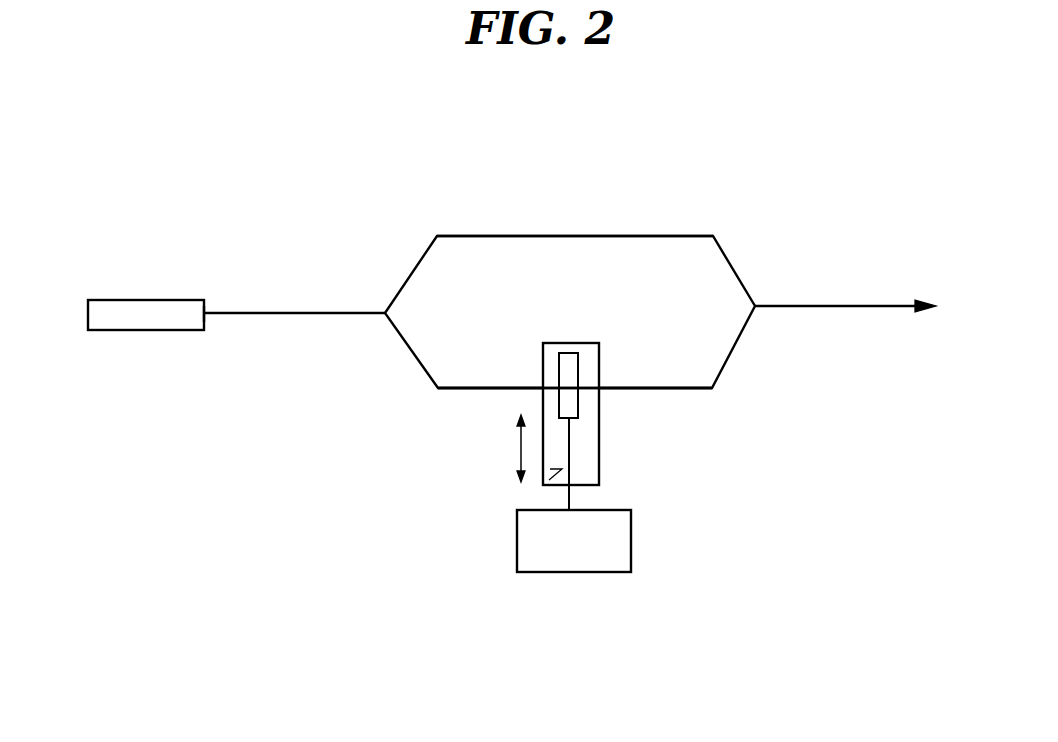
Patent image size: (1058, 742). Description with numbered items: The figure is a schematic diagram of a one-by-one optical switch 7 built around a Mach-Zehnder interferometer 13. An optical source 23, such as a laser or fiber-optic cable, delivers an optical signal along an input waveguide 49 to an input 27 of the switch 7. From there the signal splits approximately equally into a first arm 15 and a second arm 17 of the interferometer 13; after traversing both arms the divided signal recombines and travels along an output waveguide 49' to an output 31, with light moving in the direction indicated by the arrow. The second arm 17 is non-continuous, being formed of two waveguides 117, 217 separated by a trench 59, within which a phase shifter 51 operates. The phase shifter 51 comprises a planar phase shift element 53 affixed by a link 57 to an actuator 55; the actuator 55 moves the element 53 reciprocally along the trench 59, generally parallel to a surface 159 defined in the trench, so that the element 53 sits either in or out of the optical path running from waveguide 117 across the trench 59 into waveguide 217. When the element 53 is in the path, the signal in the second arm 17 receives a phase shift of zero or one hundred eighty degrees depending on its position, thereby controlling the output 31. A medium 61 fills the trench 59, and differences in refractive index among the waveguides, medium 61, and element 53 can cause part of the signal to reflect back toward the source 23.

The optical switch 7 is at (520, 308).
The Mach-Zehnder interferometer 13 is at (568, 305).
The first arm 15 is at (480, 233).
The second arm 17 is at (450, 393).
The waveguide 117 is at (515, 387).
The waveguide 217 is at (628, 385).
The optical source 23 is at (120, 317).
The input 27 is at (212, 317).
The output 31 is at (876, 307).
The input waveguide 49 is at (294, 273).
The output waveguide 49' is at (837, 273).
The phase shifter 51 is at (601, 489).
The phase shift element 53 is at (567, 375).
The actuator 55 is at (607, 553).
The link 57 is at (572, 493).
The trench 59 is at (600, 447).
The medium 61 is at (560, 470).
The surface 159 is at (588, 410).